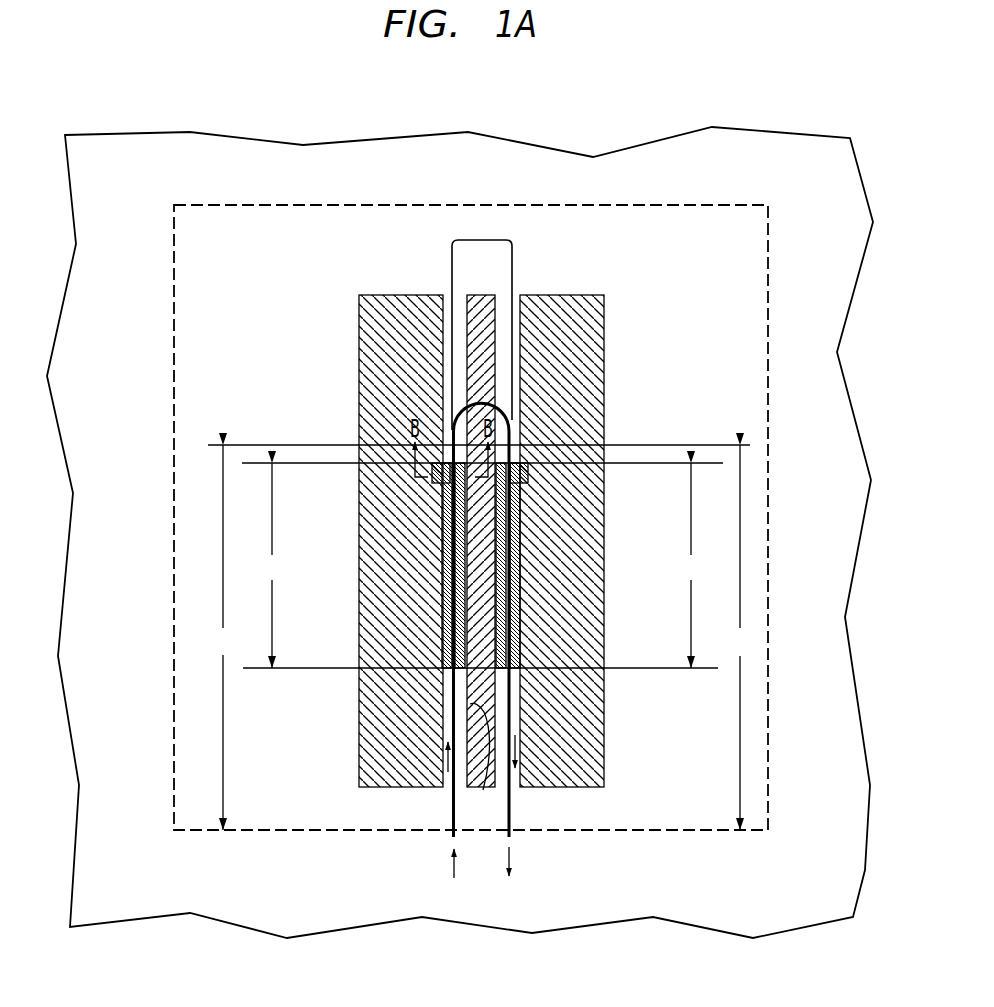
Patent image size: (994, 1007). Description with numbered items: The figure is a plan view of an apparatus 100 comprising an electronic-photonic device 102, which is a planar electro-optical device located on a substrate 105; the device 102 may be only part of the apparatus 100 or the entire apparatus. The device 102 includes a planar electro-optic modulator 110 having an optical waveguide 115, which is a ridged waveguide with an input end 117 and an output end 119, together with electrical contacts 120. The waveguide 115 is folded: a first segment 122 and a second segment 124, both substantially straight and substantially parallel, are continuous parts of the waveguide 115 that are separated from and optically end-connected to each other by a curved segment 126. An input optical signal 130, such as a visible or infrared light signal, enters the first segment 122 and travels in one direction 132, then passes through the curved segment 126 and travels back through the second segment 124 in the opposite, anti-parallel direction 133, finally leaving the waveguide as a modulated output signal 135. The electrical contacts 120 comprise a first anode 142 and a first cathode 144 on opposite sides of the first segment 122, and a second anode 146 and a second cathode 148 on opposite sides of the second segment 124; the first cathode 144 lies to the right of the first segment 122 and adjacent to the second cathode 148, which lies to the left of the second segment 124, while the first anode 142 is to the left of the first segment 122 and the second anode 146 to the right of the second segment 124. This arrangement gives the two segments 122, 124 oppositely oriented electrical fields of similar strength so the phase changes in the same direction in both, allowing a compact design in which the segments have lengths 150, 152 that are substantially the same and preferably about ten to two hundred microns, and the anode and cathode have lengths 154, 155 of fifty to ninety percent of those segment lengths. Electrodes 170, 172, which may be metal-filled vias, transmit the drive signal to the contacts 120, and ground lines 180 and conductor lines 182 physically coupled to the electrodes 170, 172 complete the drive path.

The apparatus 100 is at (157, 71).
The electronic-photonic device 102 is at (701, 193).
The substrate 105 is at (493, 145).
The electro-optic modulator 110 is at (627, 283).
The optical waveguide 115 is at (438, 707).
The input end 117 is at (453, 806).
The output end 119 is at (512, 815).
The electrical contacts 120 is at (428, 646).
The first segment 122 is at (476, 792).
The second segment 124 is at (529, 704).
The curved segment 126 is at (482, 318).
The input optical signal 130 is at (454, 869).
The direction 132 is at (443, 758).
The direction 133 is at (520, 745).
The output signal 135 is at (509, 869).
The first anode 142 is at (441, 537).
The first cathode 144 is at (443, 573).
The second anode 146 is at (521, 537).
The second cathode 148 is at (521, 575).
The length 150 is at (222, 637).
The length 152 is at (742, 637).
The length 154 is at (272, 565).
The length 155 is at (692, 565).
The first electrode 170 is at (470, 481).
The second electrode 172 is at (478, 481).
The ground lines 180 is at (404, 296).
The conductor lines 182 is at (484, 296).